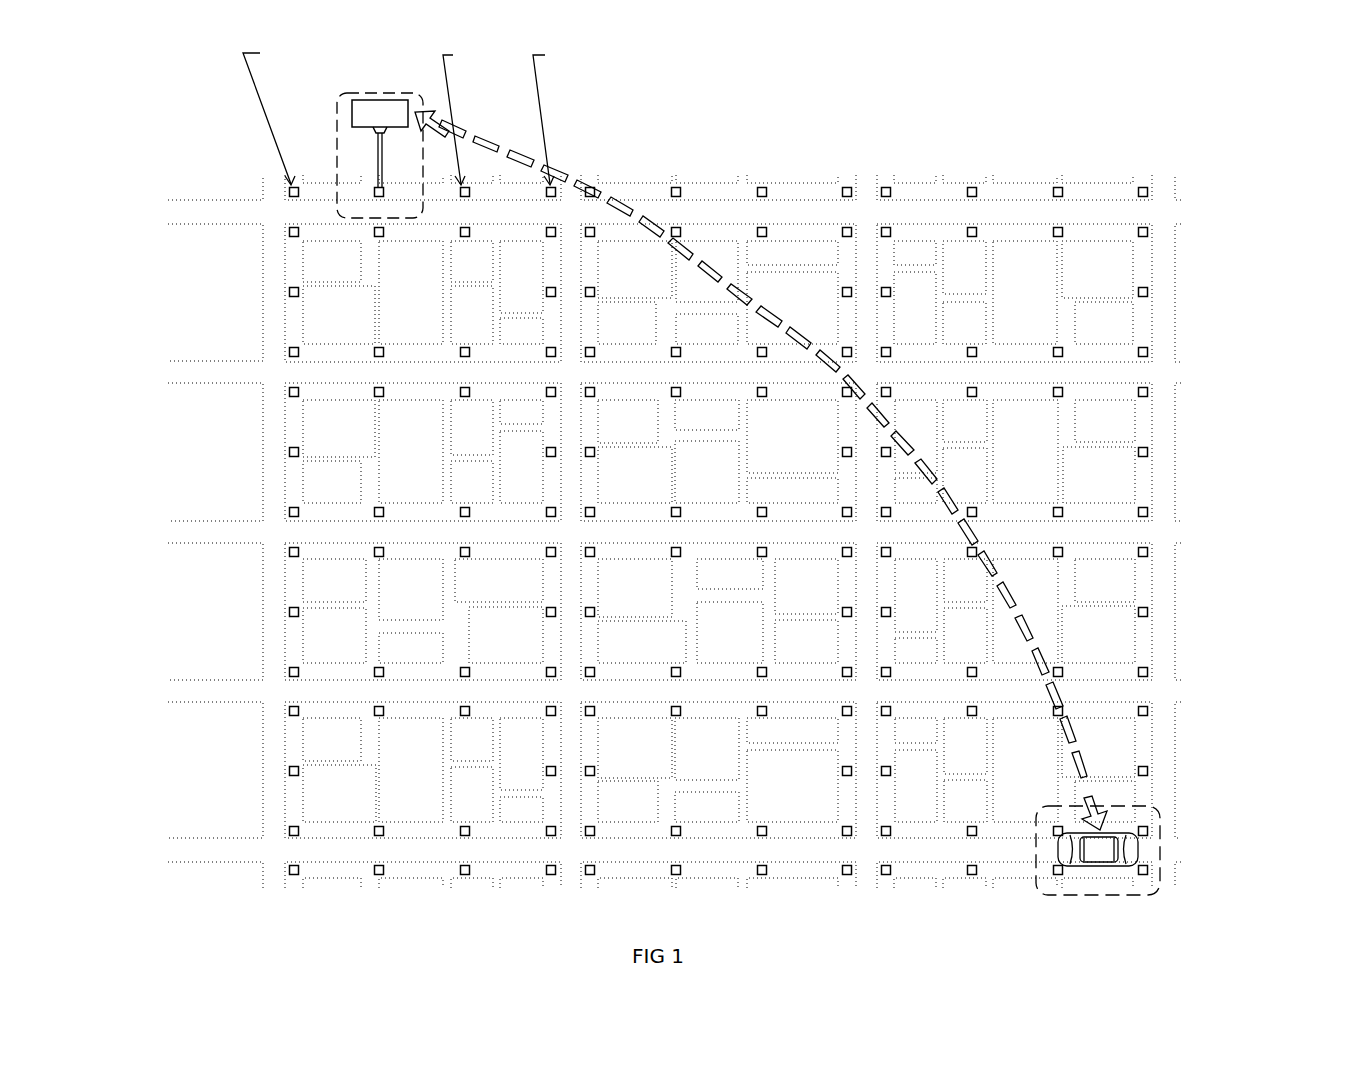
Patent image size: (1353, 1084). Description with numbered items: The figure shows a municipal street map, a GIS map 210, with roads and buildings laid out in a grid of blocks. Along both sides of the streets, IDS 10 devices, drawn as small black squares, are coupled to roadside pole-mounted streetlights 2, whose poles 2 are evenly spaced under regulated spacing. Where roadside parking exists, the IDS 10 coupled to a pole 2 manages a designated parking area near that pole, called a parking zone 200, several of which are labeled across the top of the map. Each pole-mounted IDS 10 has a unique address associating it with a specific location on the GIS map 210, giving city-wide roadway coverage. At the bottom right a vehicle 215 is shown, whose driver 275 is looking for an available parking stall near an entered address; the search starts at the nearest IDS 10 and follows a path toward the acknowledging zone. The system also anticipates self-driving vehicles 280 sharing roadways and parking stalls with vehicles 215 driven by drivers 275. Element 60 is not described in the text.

The GIS map 210 is at (190, 160).
The parking zone 200 is at (613, 54).
The IDS device 10 is at (352, 105).
The mounting 60 is at (378, 130).
The streetlight pole 2 is at (378, 157).
The vehicle 215 is at (1181, 850).
The driver 275 is at (1181, 850).
The self-driving vehicle 280 is at (1148, 853).